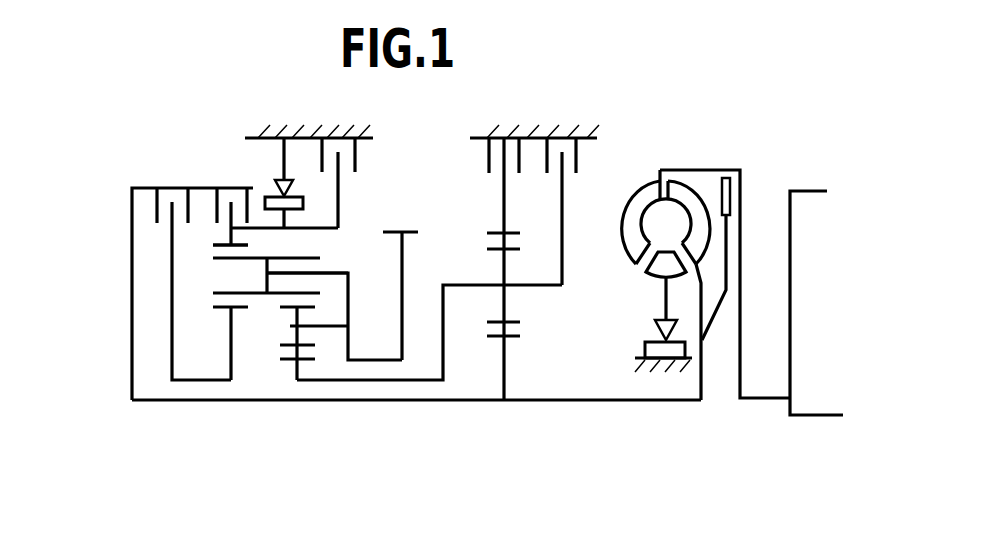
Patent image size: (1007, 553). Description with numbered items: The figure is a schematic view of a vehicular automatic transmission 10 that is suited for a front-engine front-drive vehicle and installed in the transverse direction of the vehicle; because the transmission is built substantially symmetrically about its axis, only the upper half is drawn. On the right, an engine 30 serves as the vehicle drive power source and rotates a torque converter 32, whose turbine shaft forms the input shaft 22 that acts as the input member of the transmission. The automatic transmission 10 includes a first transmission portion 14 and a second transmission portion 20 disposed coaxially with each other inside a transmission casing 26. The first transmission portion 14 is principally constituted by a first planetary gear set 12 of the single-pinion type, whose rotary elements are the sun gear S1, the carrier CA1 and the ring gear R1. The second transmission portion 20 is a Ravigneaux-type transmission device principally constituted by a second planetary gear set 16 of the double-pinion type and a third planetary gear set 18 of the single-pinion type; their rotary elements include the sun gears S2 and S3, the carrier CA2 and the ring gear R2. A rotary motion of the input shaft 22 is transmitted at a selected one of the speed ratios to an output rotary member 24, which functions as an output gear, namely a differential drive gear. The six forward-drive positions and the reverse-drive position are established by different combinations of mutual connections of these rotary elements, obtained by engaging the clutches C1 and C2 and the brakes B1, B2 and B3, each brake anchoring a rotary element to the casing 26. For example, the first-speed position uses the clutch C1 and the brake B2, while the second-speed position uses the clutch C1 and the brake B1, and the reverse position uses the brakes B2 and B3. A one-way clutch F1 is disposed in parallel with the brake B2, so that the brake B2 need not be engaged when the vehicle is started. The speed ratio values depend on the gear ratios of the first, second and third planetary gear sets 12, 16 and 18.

The automatic transmission 10 is at (622, 101).
The first planetary gear set 12 is at (506, 428).
The first transmission portion 14 is at (589, 428).
The second planetary gear set 16 is at (302, 424).
The third planetary gear set 18 is at (232, 421).
The second transmission portion 20 is at (167, 430).
The input shaft 22 is at (682, 402).
The output rotary member 24 is at (408, 228).
The transmission casing 26 is at (310, 133).
The engine 30 is at (808, 203).
The torque converter 32 is at (700, 157).
The one-way clutch F1 is at (281, 184).
The clutch C1 is at (164, 193).
The clutch C2 is at (227, 193).
The brake B1 is at (579, 155).
The brake B2 is at (354, 183).
The brake B3 is at (487, 155).
The ring gear R1 is at (495, 232).
The ring gear R2 is at (213, 244).
The sun gear S1 is at (512, 338).
The sun gear S2 is at (290, 362).
The sun gear S3 is at (222, 312).
The carrier CA1 is at (537, 288).
The carrier CA2 is at (338, 276).